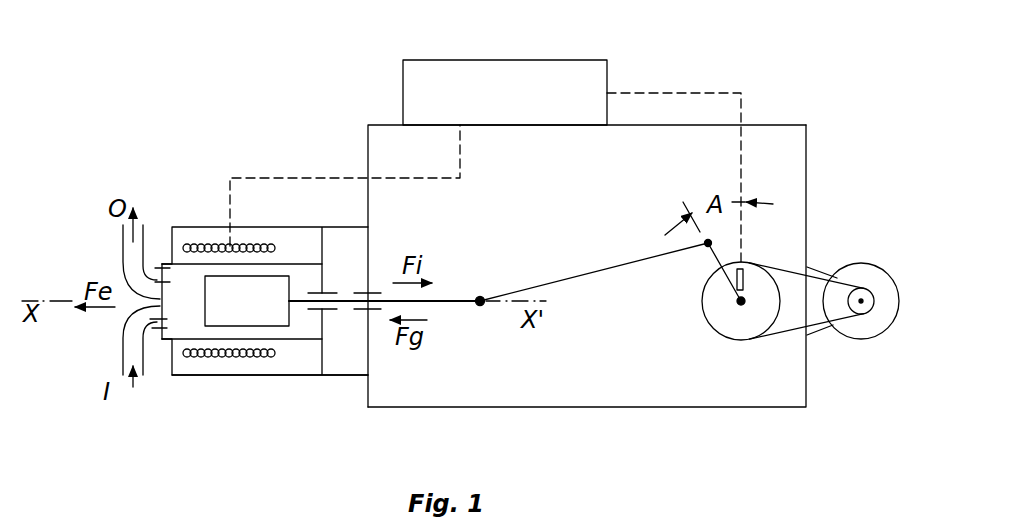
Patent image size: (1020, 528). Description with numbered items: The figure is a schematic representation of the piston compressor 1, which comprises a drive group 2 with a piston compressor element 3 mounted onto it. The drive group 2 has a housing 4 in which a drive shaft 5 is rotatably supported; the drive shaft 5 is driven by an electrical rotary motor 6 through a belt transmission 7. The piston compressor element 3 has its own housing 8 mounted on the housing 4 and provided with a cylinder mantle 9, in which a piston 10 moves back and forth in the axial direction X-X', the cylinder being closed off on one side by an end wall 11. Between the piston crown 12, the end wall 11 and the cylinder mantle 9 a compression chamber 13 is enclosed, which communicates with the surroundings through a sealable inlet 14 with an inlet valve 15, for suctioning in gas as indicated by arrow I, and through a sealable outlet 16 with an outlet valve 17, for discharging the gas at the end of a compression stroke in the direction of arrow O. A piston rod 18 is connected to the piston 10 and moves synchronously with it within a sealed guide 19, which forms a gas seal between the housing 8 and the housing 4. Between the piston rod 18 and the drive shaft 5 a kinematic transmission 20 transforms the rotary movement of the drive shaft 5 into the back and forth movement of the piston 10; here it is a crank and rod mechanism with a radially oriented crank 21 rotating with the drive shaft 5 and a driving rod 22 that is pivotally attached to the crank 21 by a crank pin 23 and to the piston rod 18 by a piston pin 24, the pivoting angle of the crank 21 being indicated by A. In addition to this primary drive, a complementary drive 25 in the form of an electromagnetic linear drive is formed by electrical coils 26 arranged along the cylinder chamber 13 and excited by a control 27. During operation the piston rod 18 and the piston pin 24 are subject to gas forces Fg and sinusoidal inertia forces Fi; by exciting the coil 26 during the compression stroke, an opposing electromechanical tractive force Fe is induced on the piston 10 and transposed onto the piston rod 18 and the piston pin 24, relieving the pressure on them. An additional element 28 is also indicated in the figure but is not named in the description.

The piston compressor 1 is at (848, 98).
The drive group 2 is at (808, 182).
The piston compressor element 3 is at (200, 226).
The housing 4 is at (807, 397).
The drive shaft 5 is at (752, 270).
The electrical rotary motor 6 is at (870, 320).
The belt transmission 7 is at (782, 332).
The housing 8 is at (227, 375).
The cylinder mantle 9 is at (302, 340).
The piston 10 is at (277, 285).
The end wall 11 is at (140, 279).
The piston crown 12 is at (203, 302).
The compression chamber 13 is at (182, 310).
The sealable inlet 14 is at (125, 358).
The inlet valve 15 is at (150, 323).
The sealable outlet 16 is at (123, 243).
The outlet valve 17 is at (168, 263).
The piston rod 18 is at (458, 297).
The sealed guide 19 is at (328, 310).
The kinematic transmission 20 is at (685, 297).
The crank 21 is at (722, 292).
The driving rod 22 is at (628, 262).
The crank pin 23 is at (707, 250).
The piston pin 24 is at (482, 305).
The complementary drive 25 is at (250, 176).
The electrical coil 26 is at (267, 357).
The control 27 is at (430, 75).
The crankshaft 28 is at (741, 301).